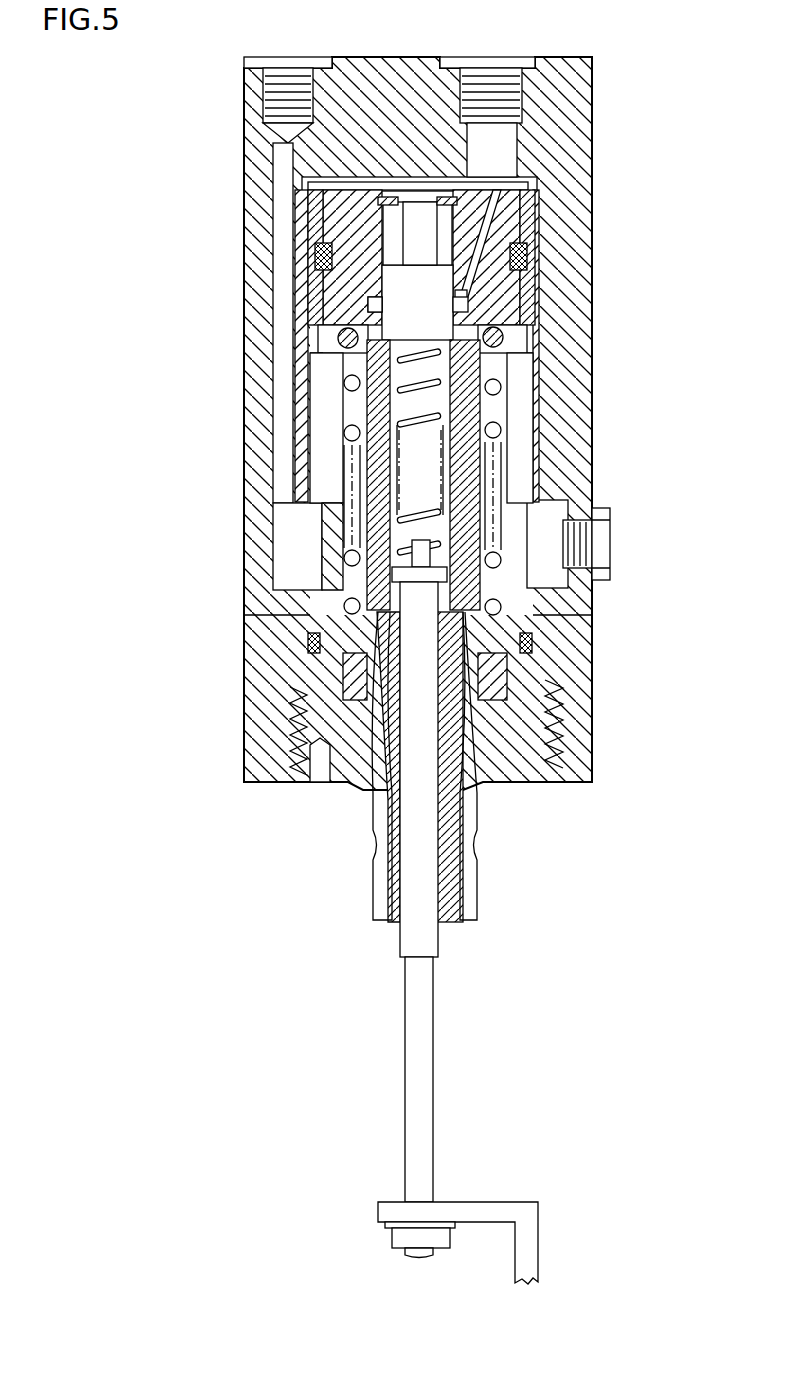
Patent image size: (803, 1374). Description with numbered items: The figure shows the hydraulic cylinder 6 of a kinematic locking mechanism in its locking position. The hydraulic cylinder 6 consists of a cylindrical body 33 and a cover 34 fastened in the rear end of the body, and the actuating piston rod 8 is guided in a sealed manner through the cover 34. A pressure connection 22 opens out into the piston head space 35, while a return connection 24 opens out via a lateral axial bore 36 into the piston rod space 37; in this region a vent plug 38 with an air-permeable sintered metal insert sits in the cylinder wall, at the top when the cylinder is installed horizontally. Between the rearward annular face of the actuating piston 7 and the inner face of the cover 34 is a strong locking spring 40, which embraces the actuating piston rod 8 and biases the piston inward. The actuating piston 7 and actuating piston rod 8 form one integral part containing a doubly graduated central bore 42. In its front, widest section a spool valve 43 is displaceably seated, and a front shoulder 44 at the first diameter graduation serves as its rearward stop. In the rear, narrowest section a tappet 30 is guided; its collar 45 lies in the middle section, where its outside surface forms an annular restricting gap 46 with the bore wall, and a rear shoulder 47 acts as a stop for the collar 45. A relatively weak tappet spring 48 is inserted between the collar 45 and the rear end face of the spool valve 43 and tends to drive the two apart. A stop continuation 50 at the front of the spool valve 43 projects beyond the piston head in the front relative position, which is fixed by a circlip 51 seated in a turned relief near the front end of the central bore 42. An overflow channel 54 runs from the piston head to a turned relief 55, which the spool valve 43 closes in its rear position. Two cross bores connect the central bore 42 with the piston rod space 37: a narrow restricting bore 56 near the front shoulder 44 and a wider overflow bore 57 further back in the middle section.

The hydraulic cylinder 6 is at (586, 108).
The actuating piston 7 is at (322, 200).
The actuating piston rod 8 is at (447, 833).
The pressure connection 22 is at (497, 78).
The return connection 24 is at (290, 80).
The tappet 30 is at (410, 947).
The cylindrical body 33 is at (570, 660).
The cover 34 is at (540, 720).
The piston head space 35 is at (537, 186).
The lateral axial bore 36 is at (286, 188).
The piston rod space 37 is at (330, 447).
The vent plug 38 is at (582, 553).
The locking spring 40 is at (505, 389).
The central bore 42 is at (355, 545).
The spool valve 43 is at (432, 308).
The front shoulder 44 is at (310, 373).
The collar 45 is at (368, 596).
The annular restricting gap 46 is at (465, 598).
The rear shoulder 47 is at (320, 626).
The tappet spring 48 is at (445, 424).
The stop continuation 50 is at (417, 204).
The circlip 51 is at (474, 188).
The overflow channel 54 is at (495, 192).
The turned relief 55 is at (368, 304).
The restricting bore 56 is at (530, 376).
The overflow bore 57 is at (470, 465).